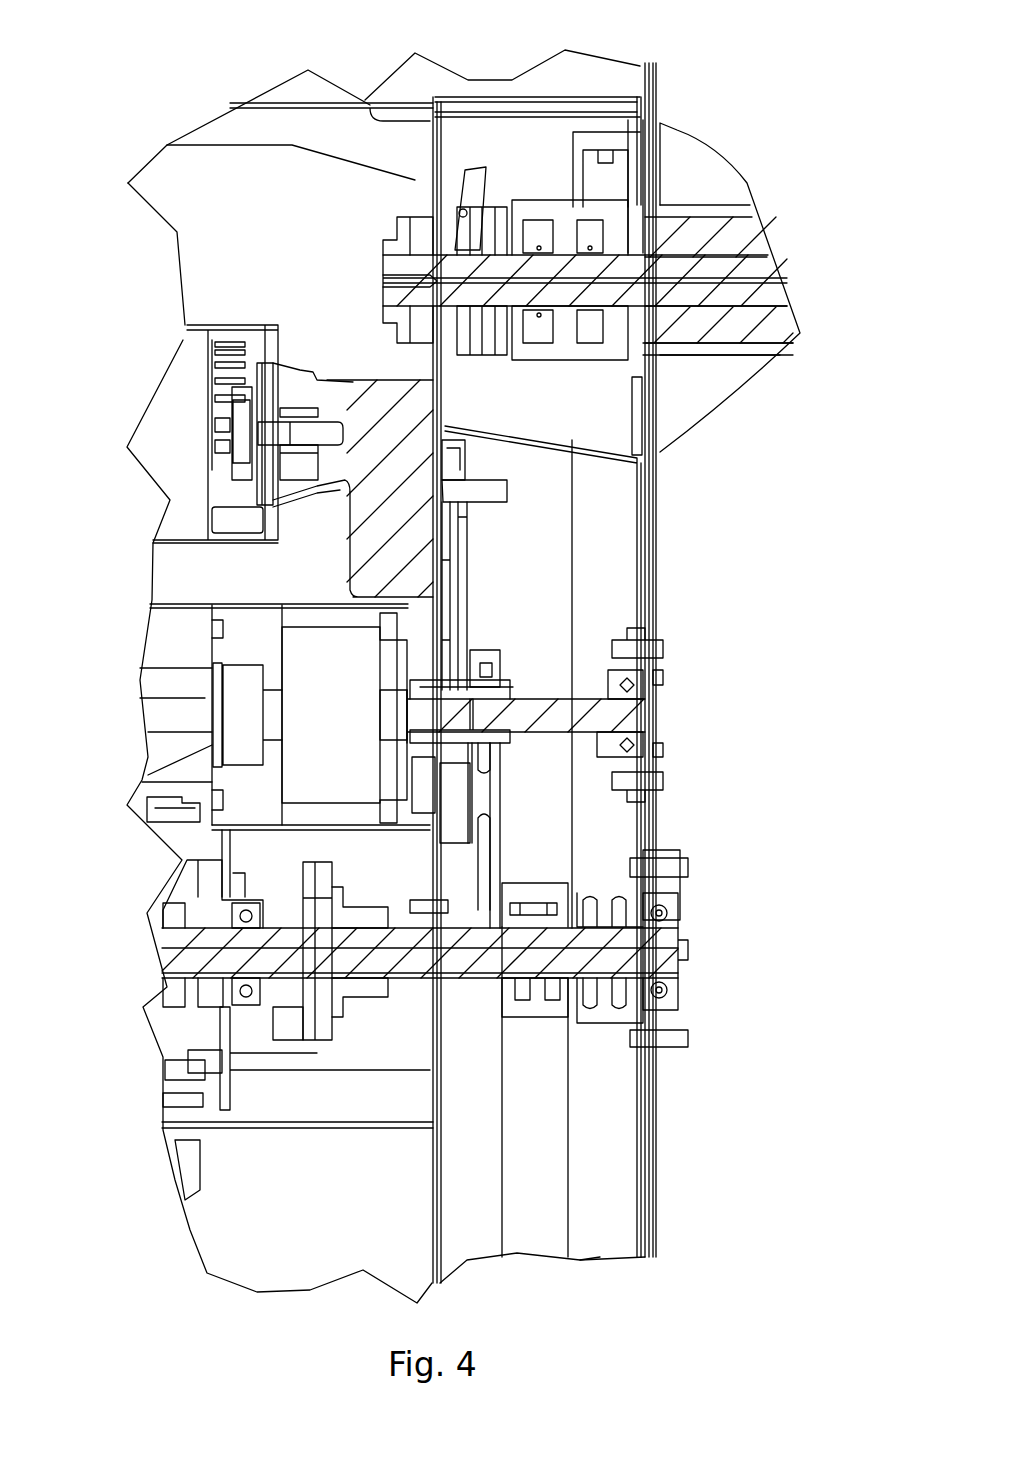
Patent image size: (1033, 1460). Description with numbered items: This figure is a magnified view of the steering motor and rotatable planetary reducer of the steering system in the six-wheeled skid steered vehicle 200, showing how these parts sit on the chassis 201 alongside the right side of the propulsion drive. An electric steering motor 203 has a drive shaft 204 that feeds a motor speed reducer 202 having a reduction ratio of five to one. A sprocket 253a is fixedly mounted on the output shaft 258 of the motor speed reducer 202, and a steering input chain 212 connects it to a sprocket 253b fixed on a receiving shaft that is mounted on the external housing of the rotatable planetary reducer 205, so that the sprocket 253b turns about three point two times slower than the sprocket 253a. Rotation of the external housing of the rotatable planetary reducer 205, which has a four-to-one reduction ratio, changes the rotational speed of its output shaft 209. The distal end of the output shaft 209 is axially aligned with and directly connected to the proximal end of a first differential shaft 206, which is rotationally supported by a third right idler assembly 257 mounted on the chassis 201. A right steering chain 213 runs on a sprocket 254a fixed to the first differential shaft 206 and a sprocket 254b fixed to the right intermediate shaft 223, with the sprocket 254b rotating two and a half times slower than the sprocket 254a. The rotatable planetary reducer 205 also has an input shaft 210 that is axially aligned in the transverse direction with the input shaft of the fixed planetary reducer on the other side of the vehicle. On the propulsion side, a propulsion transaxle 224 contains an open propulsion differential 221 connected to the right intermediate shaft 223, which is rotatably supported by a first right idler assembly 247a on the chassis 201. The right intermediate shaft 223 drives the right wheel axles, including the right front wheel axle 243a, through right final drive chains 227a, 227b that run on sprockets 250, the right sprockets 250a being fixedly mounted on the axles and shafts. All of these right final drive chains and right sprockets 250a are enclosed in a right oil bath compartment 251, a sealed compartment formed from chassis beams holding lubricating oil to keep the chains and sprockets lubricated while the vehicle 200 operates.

The six-wheeled skid steered vehicle 200 is at (140, 116).
The chassis 201 is at (430, 135).
The motor speed reducer 202 is at (377, 380).
The electric steering motor 203 is at (180, 385).
The drive shaft 204 is at (318, 415).
The rotatable planetary reducer 205 is at (302, 643).
The first differential shaft 206 is at (633, 718).
The output shaft 209 is at (452, 712).
The input shaft 210 is at (157, 717).
The steering input chain 212 is at (457, 542).
The right steering chain 213 is at (485, 802).
The open propulsion differential 221 is at (150, 1012).
The right intermediate shaft 223 is at (667, 965).
The propulsion transaxle 224 is at (146, 1080).
The right final drive chain 227a is at (617, 485).
The right final drive chain 227b is at (533, 1233).
The right wheel axle 243a is at (777, 288).
The first right idler assembly 247a is at (668, 883).
The sprockets 250 is at (593, 177).
The right sprockets 250a is at (537, 990).
The right oil bath compartment 251 is at (623, 1150).
The sprocket 253a is at (470, 466).
The sprocket 253b is at (457, 610).
The sprocket 254a is at (480, 748).
The sprocket 254b is at (485, 842).
The third right idler assembly 257 is at (638, 765).
The output shaft 258 is at (498, 490).